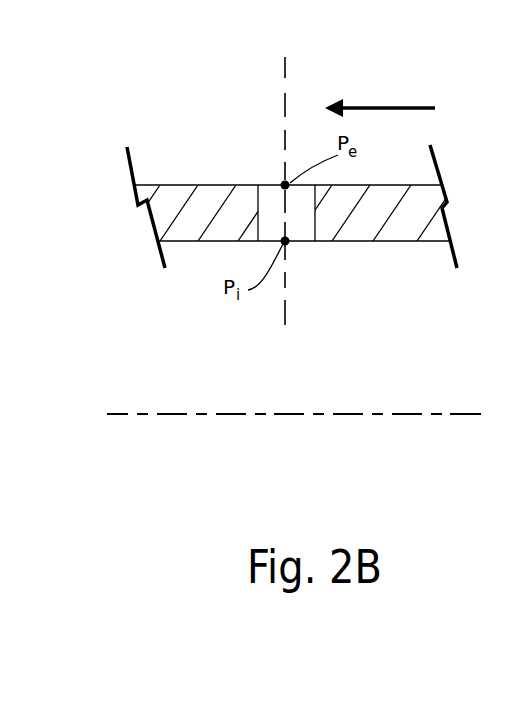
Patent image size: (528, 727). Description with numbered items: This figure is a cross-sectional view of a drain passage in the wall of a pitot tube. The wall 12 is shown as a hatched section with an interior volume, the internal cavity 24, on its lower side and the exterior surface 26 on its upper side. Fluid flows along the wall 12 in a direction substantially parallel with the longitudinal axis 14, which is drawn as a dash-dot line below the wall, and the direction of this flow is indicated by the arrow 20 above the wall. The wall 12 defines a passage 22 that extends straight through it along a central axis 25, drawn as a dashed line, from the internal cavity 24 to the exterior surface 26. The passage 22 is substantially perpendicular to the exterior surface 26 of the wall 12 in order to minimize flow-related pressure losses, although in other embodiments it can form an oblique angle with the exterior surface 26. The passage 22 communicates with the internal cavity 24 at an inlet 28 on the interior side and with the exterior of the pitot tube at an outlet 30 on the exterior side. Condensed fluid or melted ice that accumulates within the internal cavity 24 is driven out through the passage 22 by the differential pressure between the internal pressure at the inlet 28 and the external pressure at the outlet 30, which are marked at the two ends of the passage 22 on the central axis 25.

The wall 12 is at (157, 158).
The longitudinal axis 14 is at (157, 414).
The arrow 20 is at (405, 108).
The passage 22 is at (272, 198).
The internal cavity 24 is at (402, 296).
The central axis 25 is at (287, 77).
The exterior surface 26 is at (400, 185).
The inlet 28 is at (298, 272).
The outlet 30 is at (276, 157).